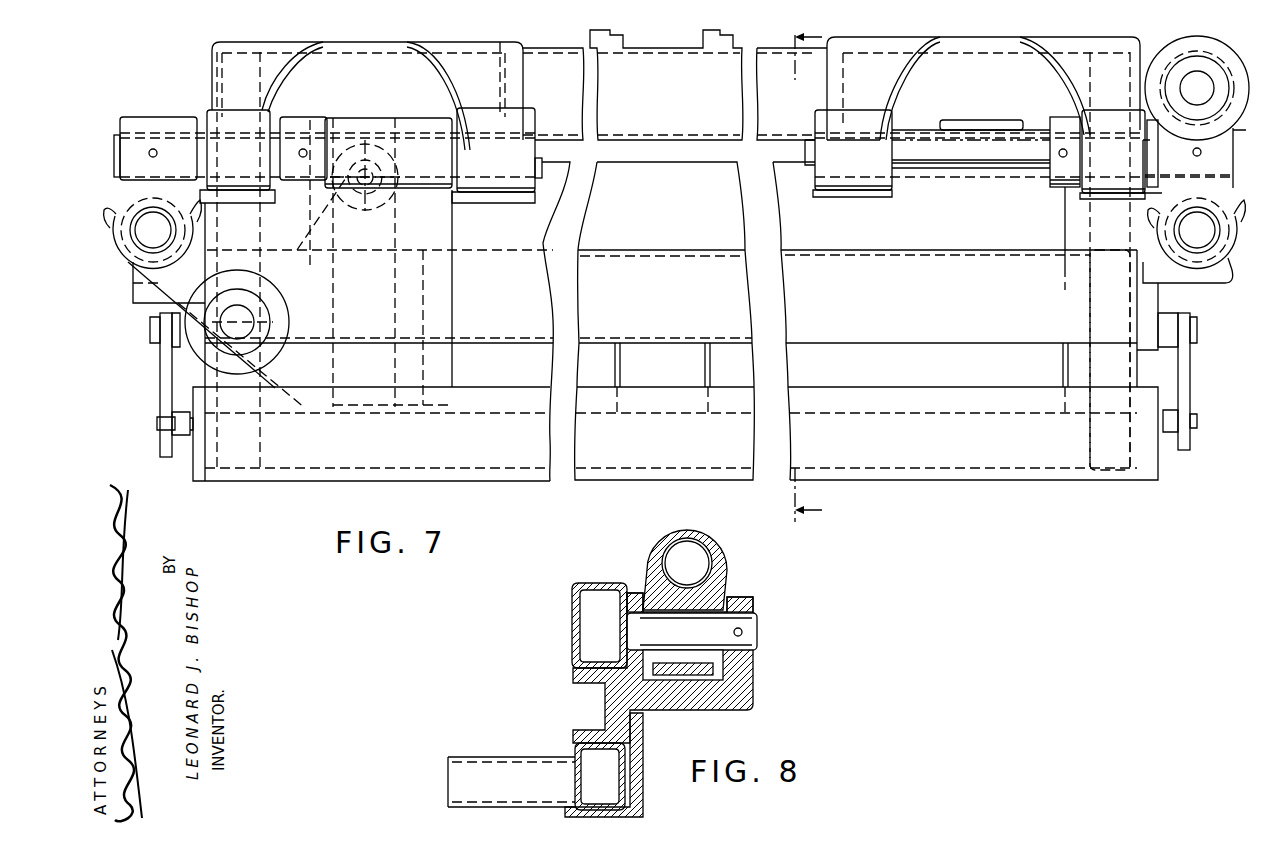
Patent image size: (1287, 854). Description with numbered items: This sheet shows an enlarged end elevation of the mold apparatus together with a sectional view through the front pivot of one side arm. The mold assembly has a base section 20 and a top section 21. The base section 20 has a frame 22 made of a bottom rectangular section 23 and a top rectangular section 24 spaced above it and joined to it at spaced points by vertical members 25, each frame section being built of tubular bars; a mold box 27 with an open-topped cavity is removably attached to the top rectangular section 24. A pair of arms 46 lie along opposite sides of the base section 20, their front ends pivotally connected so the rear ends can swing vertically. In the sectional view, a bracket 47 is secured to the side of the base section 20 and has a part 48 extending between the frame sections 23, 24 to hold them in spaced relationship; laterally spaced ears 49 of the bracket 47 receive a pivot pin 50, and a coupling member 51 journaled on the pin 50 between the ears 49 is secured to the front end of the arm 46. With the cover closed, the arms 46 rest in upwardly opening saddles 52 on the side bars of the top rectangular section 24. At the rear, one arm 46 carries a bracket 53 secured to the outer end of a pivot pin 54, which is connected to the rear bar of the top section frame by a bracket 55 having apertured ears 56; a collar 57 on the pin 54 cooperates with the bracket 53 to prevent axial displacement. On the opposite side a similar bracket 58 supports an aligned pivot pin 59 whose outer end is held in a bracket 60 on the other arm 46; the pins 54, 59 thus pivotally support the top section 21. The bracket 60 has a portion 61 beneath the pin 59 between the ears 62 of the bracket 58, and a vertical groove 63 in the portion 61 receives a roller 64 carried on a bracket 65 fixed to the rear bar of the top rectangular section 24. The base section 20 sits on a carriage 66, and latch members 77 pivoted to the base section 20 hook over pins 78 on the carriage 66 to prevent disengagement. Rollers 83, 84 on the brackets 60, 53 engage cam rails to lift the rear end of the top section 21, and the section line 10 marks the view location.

In FIG. 7, the section line 10 is at (809, 275).
In FIG. 7, the base section 20 is at (687, 252).
In FIG. 8, the base section 20 is at (599, 583).
In FIG. 7, the top section 21 is at (703, 107).
In FIG. 7, the frame 22 is at (916, 342).
In FIG. 7, the bottom rectangular section 23 is at (1088, 428).
In FIG. 8, the bottom rectangular section 23 is at (611, 786).
In FIG. 7, the top rectangular section 24 is at (712, 301).
In FIG. 8, the top rectangular section 24 is at (570, 610).
In FIG. 7, the vertical members 25 is at (643, 367).
In FIG. 7, the mold box 27 is at (995, 370).
In FIG. 7, the arms 46 is at (150, 213).
In FIG. 8, the arms 46 is at (718, 566).
In FIG. 8, the brackets 47 is at (690, 708).
In FIG. 8, the parts 48 is at (605, 694).
In FIG. 8, the ears 49 is at (632, 592).
In FIG. 8, the pivot pin 50 is at (757, 641).
In FIG. 8, the coupling members 51 is at (708, 531).
In FIG. 7, the saddles 52 is at (133, 272).
In FIG. 7, the bracket 53 is at (1230, 198).
In FIG. 7, the pivot pin 54 is at (1035, 168).
In FIG. 7, the bracket 55 is at (1012, 44).
In FIG. 7, the ears 56 is at (866, 182).
In FIG. 7, the collar 57 is at (1058, 190).
In FIG. 7, the bracket 58 is at (360, 44).
In FIG. 7, the pivot pin 59 is at (541, 140).
In FIG. 7, the bracket 60 is at (176, 110).
In FIG. 7, the portion 61 is at (452, 322).
In FIG. 7, the ears 62 is at (249, 170).
In FIG. 7, the groove 63 is at (393, 355).
In FIG. 7, the roller 64 is at (355, 140).
In FIG. 7, the bracket 65 is at (295, 243).
In FIG. 7, the carriage 66 is at (1160, 463).
In FIG. 7, the latch members 77 is at (162, 384).
In FIG. 7, the pins 78 is at (157, 426).
In FIG. 7, the roller 83 is at (237, 372).
In FIG. 7, the roller 84 is at (1165, 55).